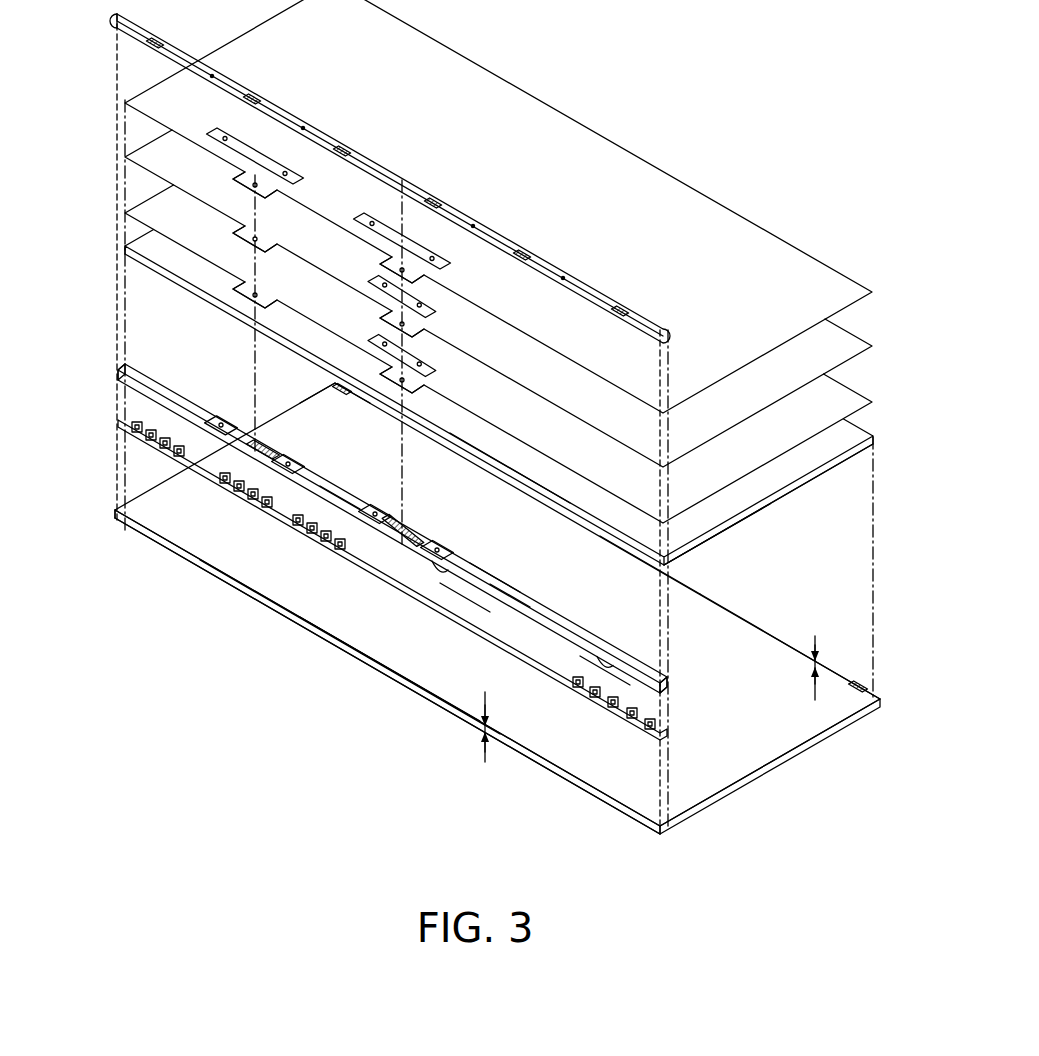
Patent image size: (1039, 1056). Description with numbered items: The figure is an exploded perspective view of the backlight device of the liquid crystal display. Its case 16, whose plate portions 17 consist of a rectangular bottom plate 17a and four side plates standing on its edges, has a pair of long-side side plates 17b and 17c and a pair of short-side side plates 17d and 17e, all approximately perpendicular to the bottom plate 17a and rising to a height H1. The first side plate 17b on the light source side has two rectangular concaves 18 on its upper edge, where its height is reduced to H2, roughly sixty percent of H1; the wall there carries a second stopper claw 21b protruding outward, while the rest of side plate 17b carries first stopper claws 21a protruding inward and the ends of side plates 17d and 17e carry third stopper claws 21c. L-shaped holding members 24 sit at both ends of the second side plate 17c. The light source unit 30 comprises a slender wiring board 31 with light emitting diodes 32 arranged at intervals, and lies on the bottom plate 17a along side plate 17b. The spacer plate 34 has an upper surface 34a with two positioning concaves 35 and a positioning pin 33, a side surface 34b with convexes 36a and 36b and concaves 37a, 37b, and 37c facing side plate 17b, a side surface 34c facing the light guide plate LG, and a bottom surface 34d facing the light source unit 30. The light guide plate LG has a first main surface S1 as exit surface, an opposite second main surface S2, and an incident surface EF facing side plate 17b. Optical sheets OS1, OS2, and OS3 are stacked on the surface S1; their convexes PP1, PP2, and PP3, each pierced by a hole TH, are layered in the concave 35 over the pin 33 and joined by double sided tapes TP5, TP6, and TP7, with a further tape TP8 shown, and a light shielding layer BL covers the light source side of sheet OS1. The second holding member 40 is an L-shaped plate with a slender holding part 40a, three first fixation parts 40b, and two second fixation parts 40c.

The case 16 is at (125, 517).
The frame 17 is at (469, 601).
The bottom plate 17a is at (732, 622).
The first side plate 17b is at (380, 672).
The second side plate 17c is at (708, 597).
The short-side side plate 17d is at (780, 757).
The short-side side plate 17e is at (330, 388).
The concave 18 is at (296, 606).
The first stopper claw 21a is at (152, 535).
The second stopper claw 21b is at (258, 600).
The third stopper claw 21c is at (668, 833).
The holding member 24 is at (340, 395).
The light source unit 30 is at (392, 580).
The wiring board 31 is at (205, 472).
The light emitting diode 32 is at (267, 508).
The positioning pin 33 is at (270, 452).
The spacer plate 34 is at (553, 607).
The upper surface 34a is at (495, 576).
The side surface 34b is at (462, 616).
The side surface 34c is at (600, 630).
The bottom surface 34d is at (672, 690).
The positioning concave 35 is at (240, 430).
The convex 36a is at (508, 650).
The convex 36b is at (340, 492).
The concave 37a is at (605, 662).
The concave 37b is at (440, 570).
The concave 37c is at (135, 376).
The second holding member 40 is at (371, 179).
The second holding part 40a is at (350, 146).
The first fixation part 40b is at (137, 40).
The second fixation part 40c is at (227, 85).
The light shielding layer BL is at (150, 258).
The incident surface EF is at (512, 470).
The height H1 is at (797, 655).
The height H2 is at (469, 718).
The light guide plate LG is at (810, 473).
The optical sheet OS1 is at (865, 403).
The optical sheet OS2 is at (862, 350).
The optical sheet OS3 is at (835, 300).
The convex PP1 is at (243, 290).
The convex PP2 is at (243, 231).
The convex PP3 is at (243, 177).
The first main surface S1 is at (772, 497).
The second main surface S2 is at (757, 512).
The hole TH is at (253, 187).
The double sided tape TP5 is at (432, 376).
The double sided tape TP6 is at (432, 312).
The double sided tape TP7 is at (445, 262).
The tape TP8 is at (290, 175).